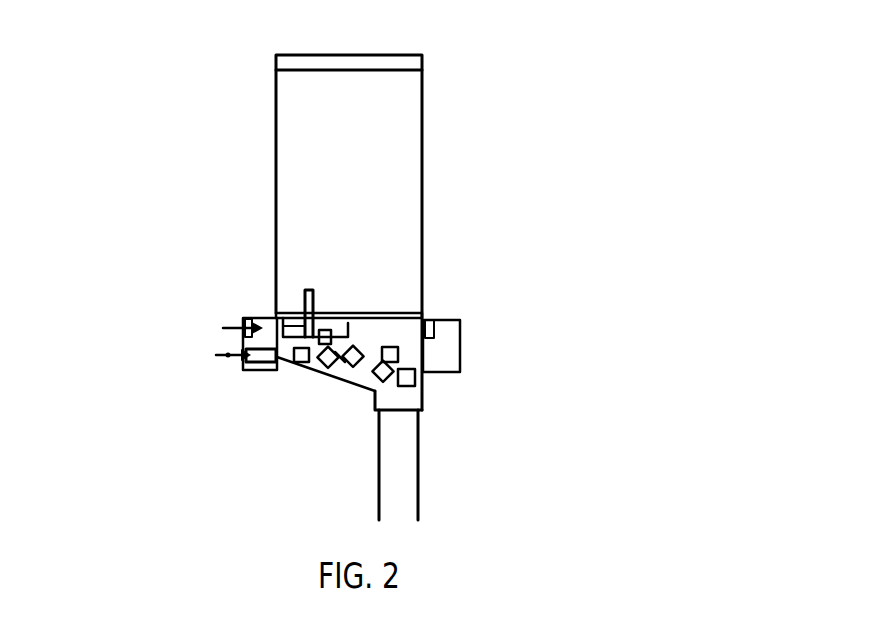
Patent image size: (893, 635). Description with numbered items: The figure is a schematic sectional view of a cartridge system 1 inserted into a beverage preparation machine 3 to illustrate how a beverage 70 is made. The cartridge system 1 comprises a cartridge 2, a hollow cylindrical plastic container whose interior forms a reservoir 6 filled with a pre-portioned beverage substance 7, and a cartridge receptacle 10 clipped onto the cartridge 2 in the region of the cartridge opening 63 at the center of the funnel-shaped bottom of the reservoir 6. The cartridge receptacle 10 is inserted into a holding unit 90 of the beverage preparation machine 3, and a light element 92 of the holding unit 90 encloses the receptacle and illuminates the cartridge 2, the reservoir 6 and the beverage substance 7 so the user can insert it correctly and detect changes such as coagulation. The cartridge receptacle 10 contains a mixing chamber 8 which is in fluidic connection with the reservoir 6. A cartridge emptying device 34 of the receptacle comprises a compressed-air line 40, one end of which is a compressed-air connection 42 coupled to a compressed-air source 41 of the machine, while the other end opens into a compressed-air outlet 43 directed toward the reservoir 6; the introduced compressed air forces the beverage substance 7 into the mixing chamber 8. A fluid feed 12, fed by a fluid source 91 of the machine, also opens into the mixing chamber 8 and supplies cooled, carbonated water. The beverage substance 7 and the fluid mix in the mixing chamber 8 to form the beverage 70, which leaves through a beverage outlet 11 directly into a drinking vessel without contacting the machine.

The cartridge system 1 is at (614, 70).
The cartridge 2 is at (407, 117).
The beverage preparation machine 3 is at (529, 426).
The reservoir 6 is at (400, 224).
The beverage substance 7 is at (288, 197).
The mixing chamber 8 is at (307, 373).
The cartridge receptacle 10 is at (363, 328).
The beverage outlet 11 is at (412, 395).
The fluid feed 12 is at (263, 369).
The cartridge emptying device 34 is at (304, 292).
The compressed-air line 40 is at (308, 310).
The compressed-air source 41 is at (243, 325).
The compressed-air connection 42 is at (278, 310).
The compressed-air outlet 43 is at (335, 333).
The cartridge opening 63 is at (366, 388).
The beverage 70 is at (400, 478).
The holding unit 90 is at (223, 328).
The fluid source 91 is at (228, 355).
The light element 92 is at (270, 317).